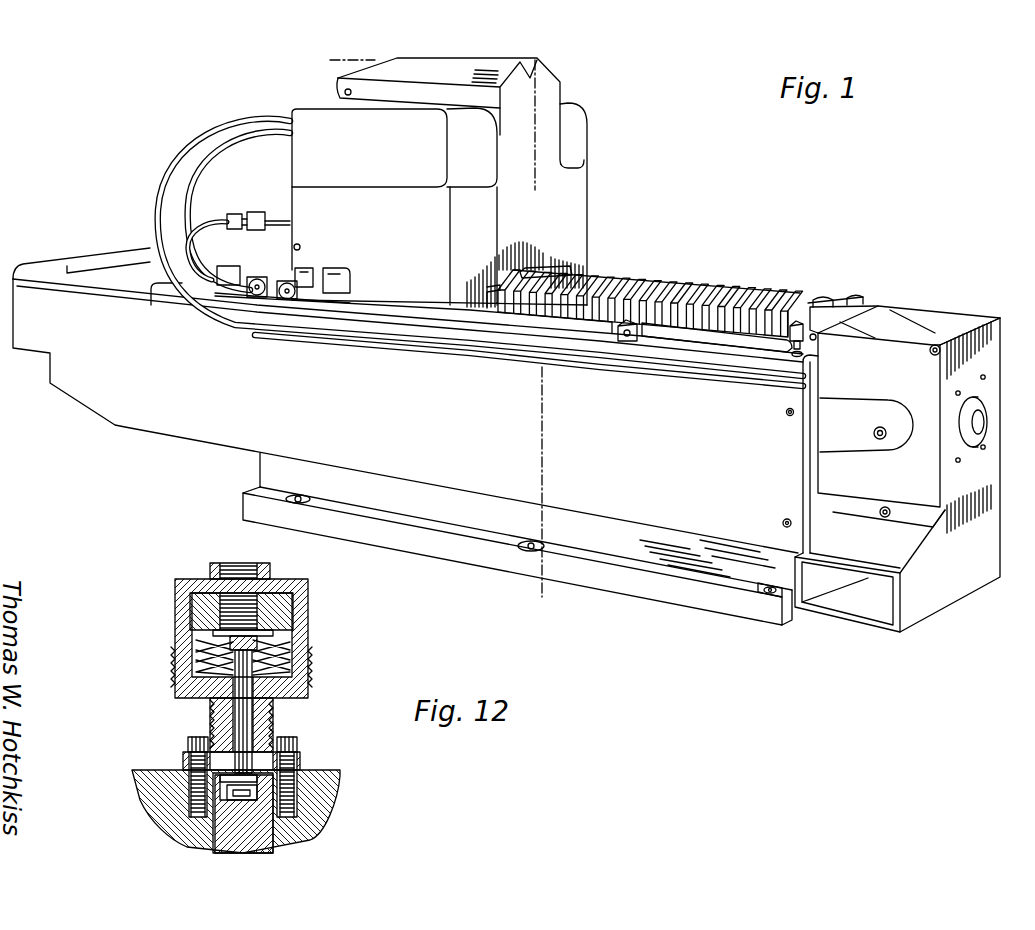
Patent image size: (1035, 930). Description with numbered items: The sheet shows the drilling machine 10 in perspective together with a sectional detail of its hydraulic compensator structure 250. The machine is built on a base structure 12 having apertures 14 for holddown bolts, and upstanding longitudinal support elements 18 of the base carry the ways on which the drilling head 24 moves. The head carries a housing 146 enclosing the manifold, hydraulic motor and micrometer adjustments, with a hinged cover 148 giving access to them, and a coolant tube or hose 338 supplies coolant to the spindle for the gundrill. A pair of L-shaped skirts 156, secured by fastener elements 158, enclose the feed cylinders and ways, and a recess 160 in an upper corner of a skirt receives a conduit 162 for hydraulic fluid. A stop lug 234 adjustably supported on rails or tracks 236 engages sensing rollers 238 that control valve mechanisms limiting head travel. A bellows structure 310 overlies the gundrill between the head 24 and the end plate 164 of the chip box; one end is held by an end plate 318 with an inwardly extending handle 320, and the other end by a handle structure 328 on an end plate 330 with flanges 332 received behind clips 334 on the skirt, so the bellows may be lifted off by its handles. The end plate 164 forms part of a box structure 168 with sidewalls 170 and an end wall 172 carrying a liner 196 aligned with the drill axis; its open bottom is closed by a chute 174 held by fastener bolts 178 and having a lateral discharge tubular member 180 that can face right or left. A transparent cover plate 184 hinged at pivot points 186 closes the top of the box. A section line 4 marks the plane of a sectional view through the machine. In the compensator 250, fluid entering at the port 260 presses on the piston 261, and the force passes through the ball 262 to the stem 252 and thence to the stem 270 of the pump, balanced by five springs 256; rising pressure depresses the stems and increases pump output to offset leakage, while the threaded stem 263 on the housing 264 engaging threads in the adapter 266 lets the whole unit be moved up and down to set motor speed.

In FIG. 1, the section line 4- 4 is at (322, 52).
In FIG. 1, the drilling machine 10 is at (650, 284).
In FIG. 1, the base structure 12 is at (700, 597).
In FIG. 1, the apertures 14 is at (767, 597).
In FIG. 1, the upstanding longitudinal support elements 18 is at (643, 547).
In FIG. 1, the drilling head 24 is at (600, 203).
In FIG. 1, the housing 146 is at (565, 187).
In FIG. 1, the cover 148 is at (543, 77).
In FIG. 1, the L-shaped skirts 156 is at (217, 437).
In FIG. 1, the fastener elements 158 is at (782, 522).
In FIG. 1, the recess 160 is at (171, 305).
In FIG. 1, the conduit 162 is at (175, 172).
In FIG. 1, the end plate 164 is at (817, 515).
In FIG. 1, the box structure 168 is at (995, 352).
In FIG. 1, the sidewalls 170 is at (882, 374).
In FIG. 1, the end wall 172 is at (953, 408).
In FIG. 1, the chute 174 is at (953, 537).
In FIG. 1, the fastener bolts 178 is at (880, 511).
In FIG. 1, the discharge tubular member 180 is at (877, 622).
In FIG. 1, the transparent cover plate 184 is at (933, 330).
In FIG. 1, the pivot points 186 is at (935, 356).
In FIG. 1, the liner 196 is at (977, 447).
In FIG. 1, the stop lug 234 is at (630, 341).
In FIG. 1, the rails or tracks 236 is at (745, 343).
In FIG. 1, the sensing rollers 238 is at (340, 268).
In FIG. 1, the bellows structure 310 is at (762, 285).
In FIG. 1, the end plate 318 is at (497, 270).
In FIG. 1, the handle 320 is at (560, 262).
In FIG. 1, the handle structure 328 is at (812, 300).
In FIG. 1, the end plate 330 is at (853, 297).
In FIG. 1, the flanges 332 is at (797, 325).
In FIG. 1, the clips 334 is at (803, 350).
In FIG. 1, the coolant tube or hose 338 is at (193, 228).
In FIG. 12, the compensator structure 250 is at (326, 665).
In FIG. 12, the stem 252 is at (243, 706).
In FIG. 12, the springs 256 is at (267, 641).
In FIG. 12, the port 260 is at (240, 566).
In FIG. 12, the piston 261 is at (263, 605).
In FIG. 12, the ball 262 is at (243, 631).
In FIG. 12, the threaded stem 263 is at (225, 705).
In FIG. 12, the housing 264 is at (180, 621).
In FIG. 12, the adapter 266 is at (300, 755).
In FIG. 12, the stem 270 is at (263, 833).